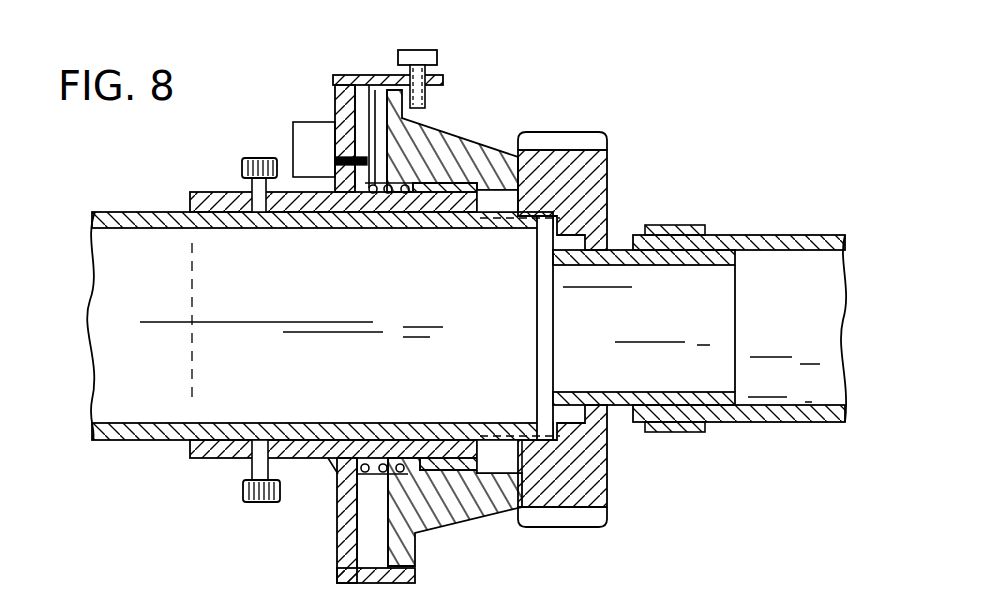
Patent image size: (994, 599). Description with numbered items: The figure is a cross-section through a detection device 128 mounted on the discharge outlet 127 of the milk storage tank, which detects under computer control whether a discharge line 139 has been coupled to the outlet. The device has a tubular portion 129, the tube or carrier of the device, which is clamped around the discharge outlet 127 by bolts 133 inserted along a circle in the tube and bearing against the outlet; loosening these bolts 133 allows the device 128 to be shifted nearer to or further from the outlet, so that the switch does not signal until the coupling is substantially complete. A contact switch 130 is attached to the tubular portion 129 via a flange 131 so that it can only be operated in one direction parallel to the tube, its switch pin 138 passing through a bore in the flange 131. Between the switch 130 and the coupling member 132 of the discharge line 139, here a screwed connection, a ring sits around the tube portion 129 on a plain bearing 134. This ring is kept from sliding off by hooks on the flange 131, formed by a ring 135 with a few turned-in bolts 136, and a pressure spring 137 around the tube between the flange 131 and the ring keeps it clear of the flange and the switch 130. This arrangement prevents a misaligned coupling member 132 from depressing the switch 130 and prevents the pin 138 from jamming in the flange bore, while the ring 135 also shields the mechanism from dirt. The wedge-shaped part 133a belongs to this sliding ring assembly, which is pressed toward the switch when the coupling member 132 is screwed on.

The discharge outlet 127 is at (512, 371).
The detection device 128 is at (414, 291).
The tubular portion 129 is at (294, 311).
The contact switch 130 is at (307, 122).
The flange 131 is at (338, 537).
The coupling member 132 is at (594, 166).
The bolt 133 is at (215, 495).
The tapered wedge 133a is at (467, 153).
The plain bearing 134 is at (454, 195).
The ring 135 is at (350, 76).
The turned-in bolt 136 is at (430, 52).
The pressure spring 137 is at (383, 193).
The switch pin 138 is at (372, 150).
The discharge line 139 is at (792, 182).